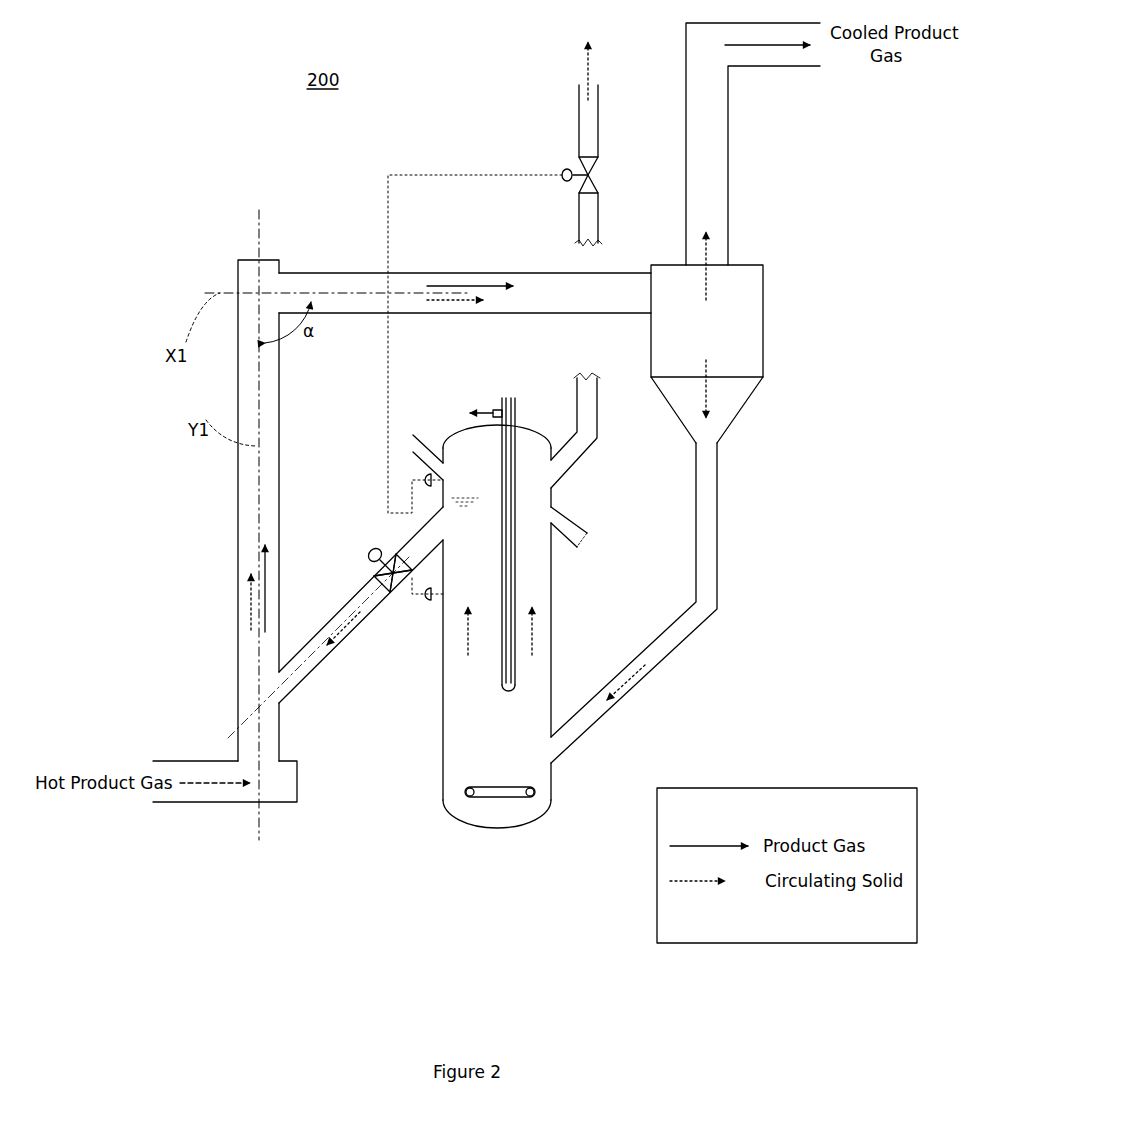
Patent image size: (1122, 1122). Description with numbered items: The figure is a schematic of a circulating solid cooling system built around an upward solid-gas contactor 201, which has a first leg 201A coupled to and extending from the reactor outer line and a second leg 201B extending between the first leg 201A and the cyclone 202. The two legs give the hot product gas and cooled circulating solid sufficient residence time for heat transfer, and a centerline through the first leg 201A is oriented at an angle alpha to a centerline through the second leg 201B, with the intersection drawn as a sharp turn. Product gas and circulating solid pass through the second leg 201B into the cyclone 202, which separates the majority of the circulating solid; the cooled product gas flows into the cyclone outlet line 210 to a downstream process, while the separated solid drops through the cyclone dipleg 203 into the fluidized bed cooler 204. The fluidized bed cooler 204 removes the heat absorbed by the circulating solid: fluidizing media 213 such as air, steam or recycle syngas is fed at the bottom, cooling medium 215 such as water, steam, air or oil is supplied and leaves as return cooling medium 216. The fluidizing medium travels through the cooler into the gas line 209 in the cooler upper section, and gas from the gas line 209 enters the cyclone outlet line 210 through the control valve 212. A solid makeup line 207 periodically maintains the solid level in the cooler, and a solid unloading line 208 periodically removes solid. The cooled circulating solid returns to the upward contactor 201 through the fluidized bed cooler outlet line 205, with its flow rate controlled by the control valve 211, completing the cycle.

The upward solid-gas contactor 201 is at (238, 545).
The first leg 201A is at (240, 470).
The second leg 201B is at (375, 271).
The cyclone 202 is at (757, 320).
The cyclone dipleg 203 is at (717, 556).
The fluidized bed cooler 204 is at (457, 688).
The fluidized bed cooler outlet line 205 is at (386, 615).
The solid makeup line 207 is at (425, 435).
The solid unloading line 208 is at (575, 522).
The gas line 209 is at (582, 95).
The cyclone outlet line 210 is at (690, 26).
The control valve 211 is at (395, 556).
The control valve 212 is at (575, 178).
The fluidizing media 213 is at (466, 792).
The cooling medium 215 is at (507, 396).
The return cooling medium 216 is at (469, 412).